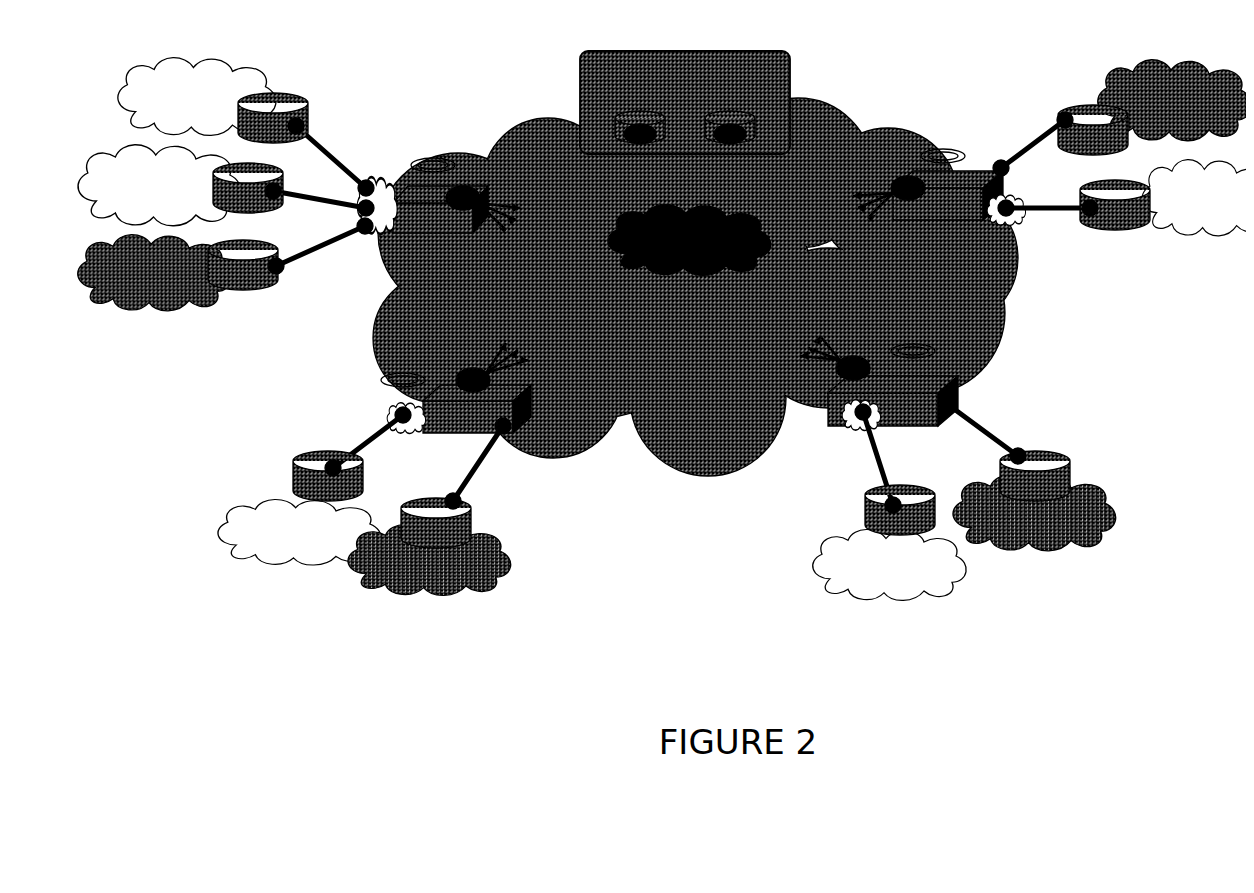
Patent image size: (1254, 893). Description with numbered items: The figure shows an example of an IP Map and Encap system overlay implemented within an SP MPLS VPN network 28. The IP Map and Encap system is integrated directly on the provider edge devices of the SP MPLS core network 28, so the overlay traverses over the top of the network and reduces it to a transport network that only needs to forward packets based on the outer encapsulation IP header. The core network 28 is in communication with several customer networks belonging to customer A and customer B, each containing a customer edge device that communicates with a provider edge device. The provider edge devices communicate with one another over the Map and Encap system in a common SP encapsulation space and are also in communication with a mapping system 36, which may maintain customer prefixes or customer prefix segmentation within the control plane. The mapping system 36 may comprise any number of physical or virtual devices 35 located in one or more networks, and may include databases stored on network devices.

The SP MPLS VPN network 28 is at (860, 100).
The physical or virtual device 35 is at (620, 118).
The mapping system 36 is at (688, 44).